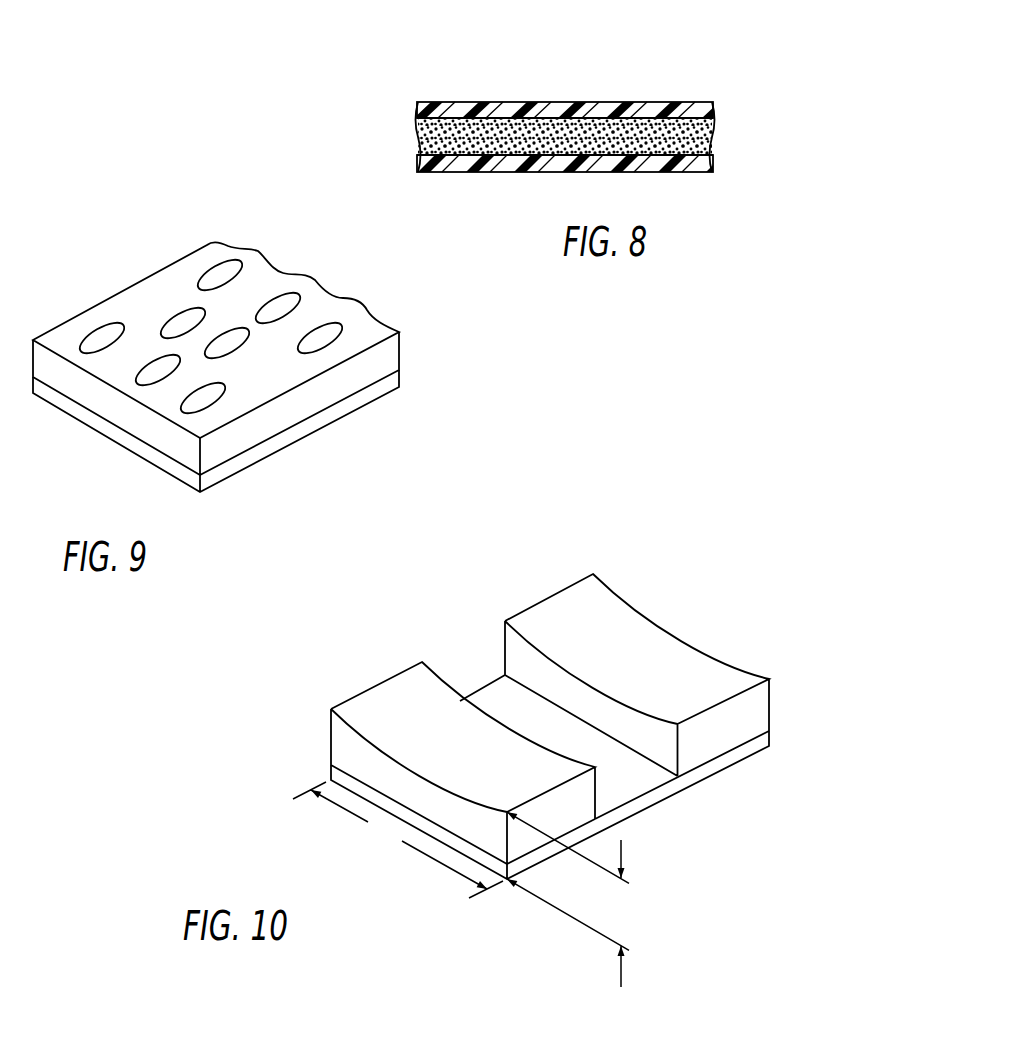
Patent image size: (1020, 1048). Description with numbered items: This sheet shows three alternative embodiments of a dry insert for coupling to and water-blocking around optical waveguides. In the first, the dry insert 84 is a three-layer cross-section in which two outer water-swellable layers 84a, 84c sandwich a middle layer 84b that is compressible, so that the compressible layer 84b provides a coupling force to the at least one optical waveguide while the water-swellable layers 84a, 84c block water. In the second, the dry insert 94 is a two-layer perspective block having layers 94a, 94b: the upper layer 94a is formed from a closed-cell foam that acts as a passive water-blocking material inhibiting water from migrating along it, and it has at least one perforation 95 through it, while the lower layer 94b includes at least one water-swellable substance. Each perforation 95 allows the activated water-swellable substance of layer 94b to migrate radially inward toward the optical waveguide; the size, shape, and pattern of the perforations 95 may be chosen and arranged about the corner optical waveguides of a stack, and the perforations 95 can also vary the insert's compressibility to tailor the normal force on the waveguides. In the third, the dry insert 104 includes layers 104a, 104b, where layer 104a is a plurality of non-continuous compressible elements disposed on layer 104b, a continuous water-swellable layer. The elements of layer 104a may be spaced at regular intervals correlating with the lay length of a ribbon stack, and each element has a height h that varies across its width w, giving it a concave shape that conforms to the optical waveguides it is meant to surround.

In FIG. 8, the dry insert 84 is at (552, 115).
In FIG. 8, the water-swellable layer 84a is at (680, 172).
In FIG. 8, the compressible layer 84b is at (703, 138).
In FIG. 8, the water-swellable layer 84c is at (676, 102).
In FIG. 9, the dry insert 94 is at (216, 351).
In FIG. 9, the closed-cell foam layer 94a is at (250, 432).
In FIG. 9, the water-swellable layer 94b is at (217, 485).
In FIG. 9, the perforation 95 is at (231, 333).
In FIG. 10, the dry insert 104 is at (500, 751).
In FIG. 10, the non-continuous compressible elements layer 104a is at (616, 628).
In FIG. 10, the continuous water-swellable layer 104b is at (627, 782).